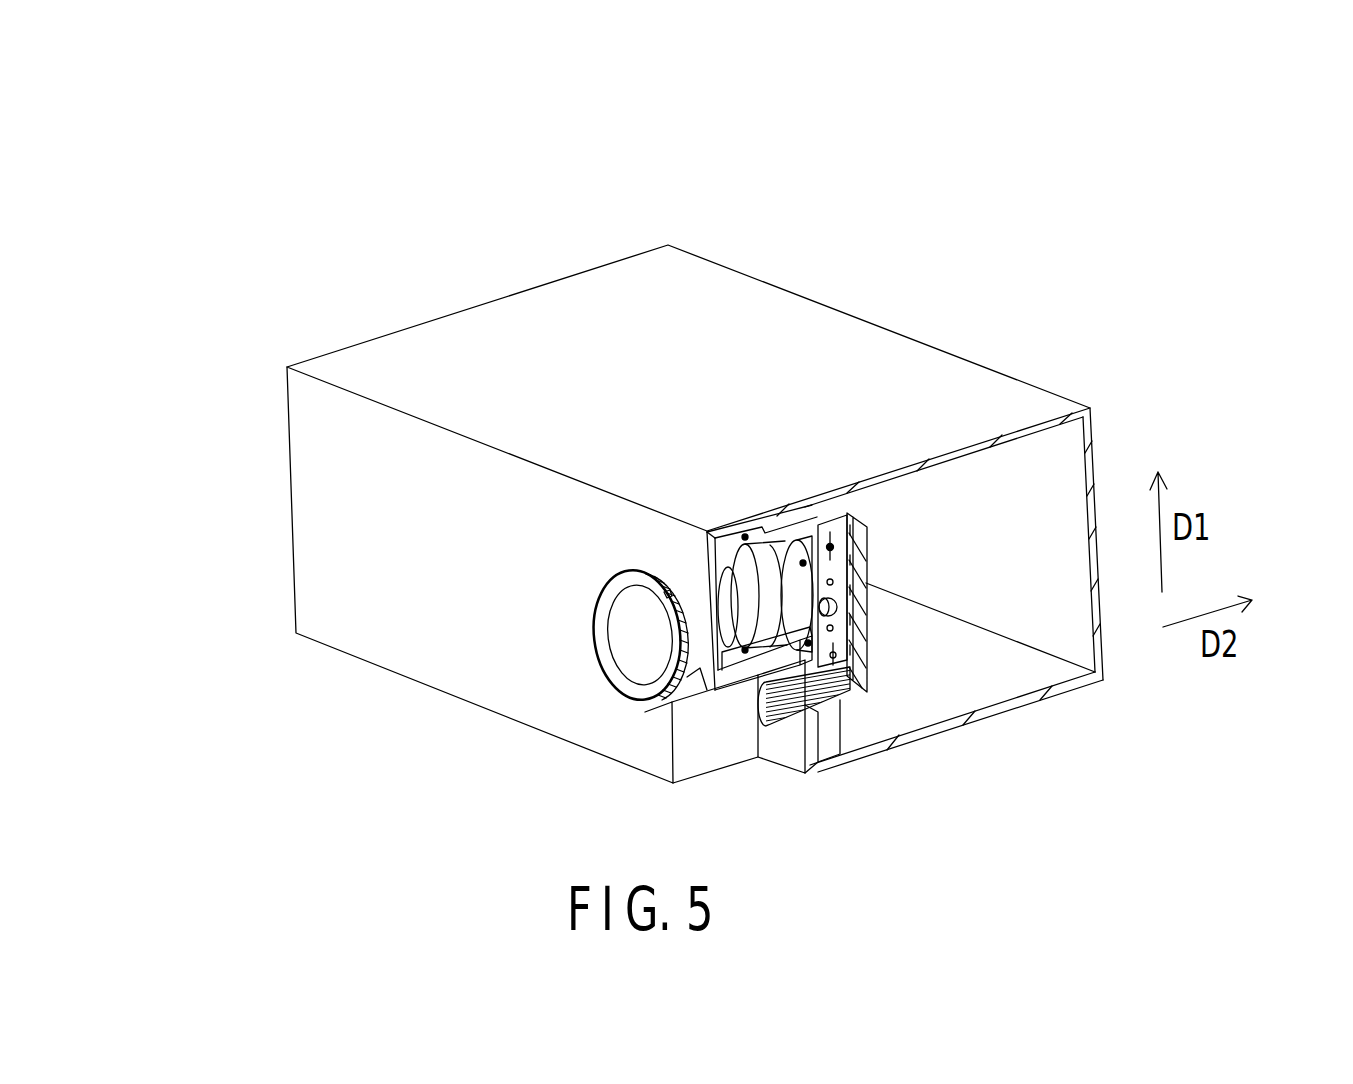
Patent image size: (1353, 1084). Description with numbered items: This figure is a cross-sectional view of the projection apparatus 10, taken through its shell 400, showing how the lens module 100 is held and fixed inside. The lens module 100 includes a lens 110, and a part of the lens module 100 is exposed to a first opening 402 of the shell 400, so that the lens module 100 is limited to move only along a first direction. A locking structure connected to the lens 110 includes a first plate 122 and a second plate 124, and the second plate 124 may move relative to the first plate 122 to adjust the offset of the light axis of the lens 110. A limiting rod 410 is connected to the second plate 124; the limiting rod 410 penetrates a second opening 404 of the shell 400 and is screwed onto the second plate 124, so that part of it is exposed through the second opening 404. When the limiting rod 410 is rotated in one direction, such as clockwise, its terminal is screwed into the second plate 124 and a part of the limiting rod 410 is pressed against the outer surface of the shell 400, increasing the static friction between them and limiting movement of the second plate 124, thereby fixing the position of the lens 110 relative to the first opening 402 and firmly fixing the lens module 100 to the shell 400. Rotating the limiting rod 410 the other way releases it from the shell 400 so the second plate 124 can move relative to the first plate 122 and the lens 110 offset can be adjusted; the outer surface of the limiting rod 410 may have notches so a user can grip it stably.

The projection apparatus 10 is at (203, 340).
The lens module 100 is at (792, 185).
The lens 110 is at (750, 568).
The first plate 122 is at (866, 558).
The second plate 124 is at (823, 527).
The shell 400 is at (430, 688).
The first opening 402 is at (654, 703).
The second opening 404 is at (828, 707).
The limiting rod 410 is at (766, 697).